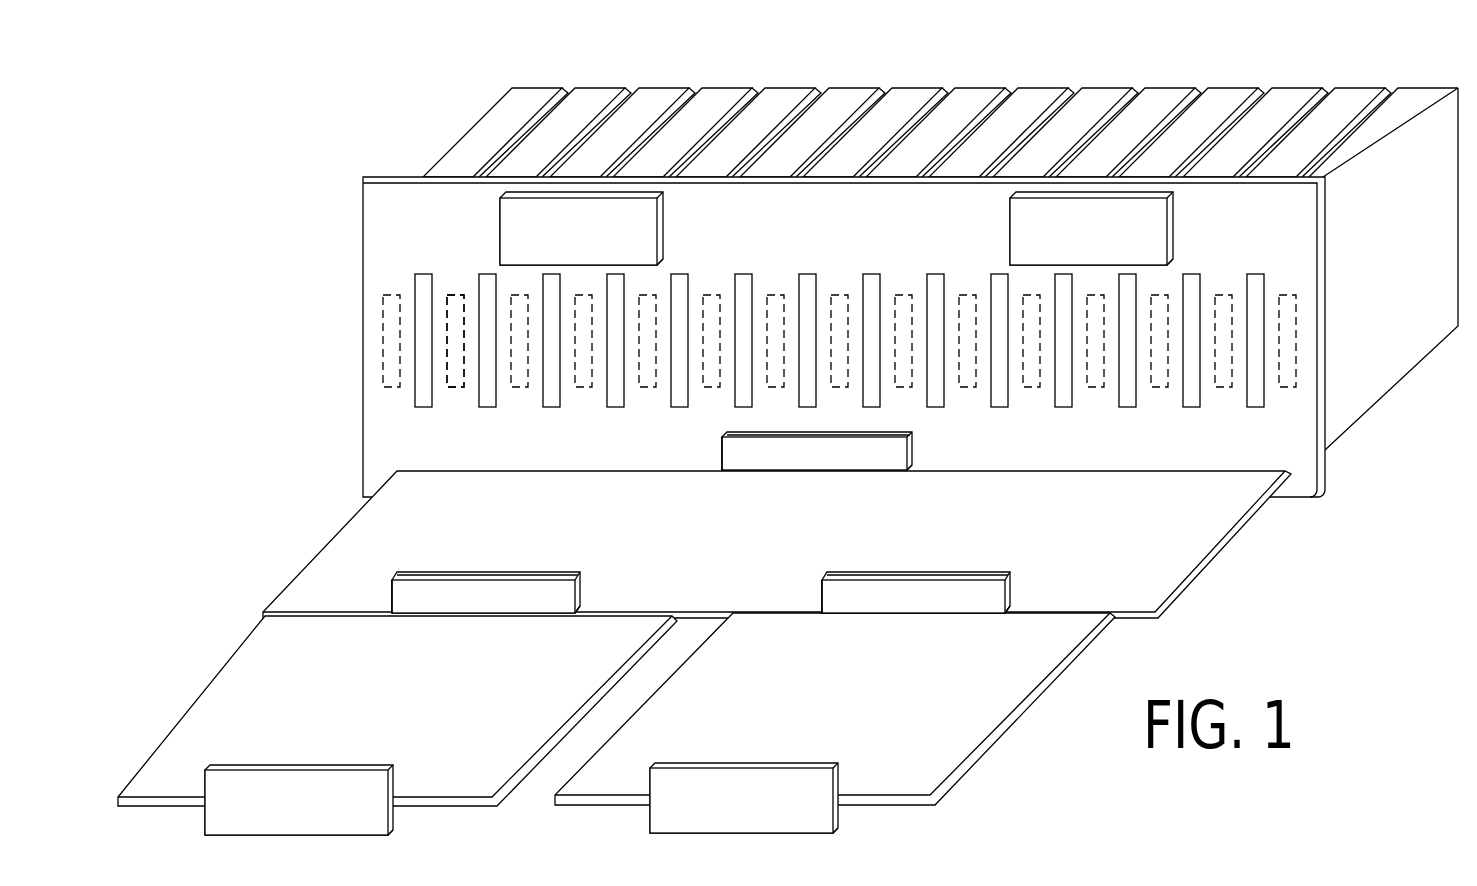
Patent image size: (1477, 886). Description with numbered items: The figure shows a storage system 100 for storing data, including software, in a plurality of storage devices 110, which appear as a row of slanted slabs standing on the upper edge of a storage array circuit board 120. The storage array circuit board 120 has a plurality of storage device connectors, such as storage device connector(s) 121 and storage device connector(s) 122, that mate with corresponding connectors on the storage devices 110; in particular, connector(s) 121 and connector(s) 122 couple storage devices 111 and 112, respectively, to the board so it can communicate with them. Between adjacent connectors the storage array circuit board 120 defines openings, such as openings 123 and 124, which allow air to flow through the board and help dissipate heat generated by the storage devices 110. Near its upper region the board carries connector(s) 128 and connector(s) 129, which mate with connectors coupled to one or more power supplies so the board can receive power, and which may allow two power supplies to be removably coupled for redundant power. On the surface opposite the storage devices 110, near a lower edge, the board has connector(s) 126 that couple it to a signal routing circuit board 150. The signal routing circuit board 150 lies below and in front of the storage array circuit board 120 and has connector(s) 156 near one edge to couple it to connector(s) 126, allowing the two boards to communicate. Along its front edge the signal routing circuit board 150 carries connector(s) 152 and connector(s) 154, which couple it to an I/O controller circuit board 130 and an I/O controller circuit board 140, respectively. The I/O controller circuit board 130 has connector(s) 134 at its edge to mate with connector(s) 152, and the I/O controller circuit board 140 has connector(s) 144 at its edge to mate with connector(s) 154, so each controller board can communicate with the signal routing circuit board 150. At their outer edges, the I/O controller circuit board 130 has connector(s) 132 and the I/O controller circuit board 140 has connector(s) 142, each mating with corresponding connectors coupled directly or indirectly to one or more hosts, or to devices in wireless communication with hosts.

The storage system 100 is at (222, 84).
The storage devices 110 is at (428, 133).
The storage device 111 is at (528, 98).
The storage device 112 is at (592, 98).
The storage array circuit board 120 is at (373, 222).
The storage device connector(s) 121 is at (388, 295).
The storage device connector(s) 122 is at (452, 295).
The opening 123 is at (1190, 274).
The opening 124 is at (1253, 274).
The connector(s) 126 is at (912, 453).
The connector(s) 128 is at (664, 226).
The connector(s) 129 is at (1173, 225).
The I/O controller circuit board 130 is at (237, 691).
The connector(s) 132 is at (206, 786).
The connector(s) 134 is at (392, 597).
The I/O controller circuit board 140 is at (1020, 693).
The connector(s) 142 is at (650, 784).
The connector(s) 144 is at (820, 600).
The signal routing circuit board 150 is at (358, 529).
The connector(s) 152 is at (583, 584).
The connector(s) 154 is at (1012, 592).
The connector(s) 156 is at (722, 456).